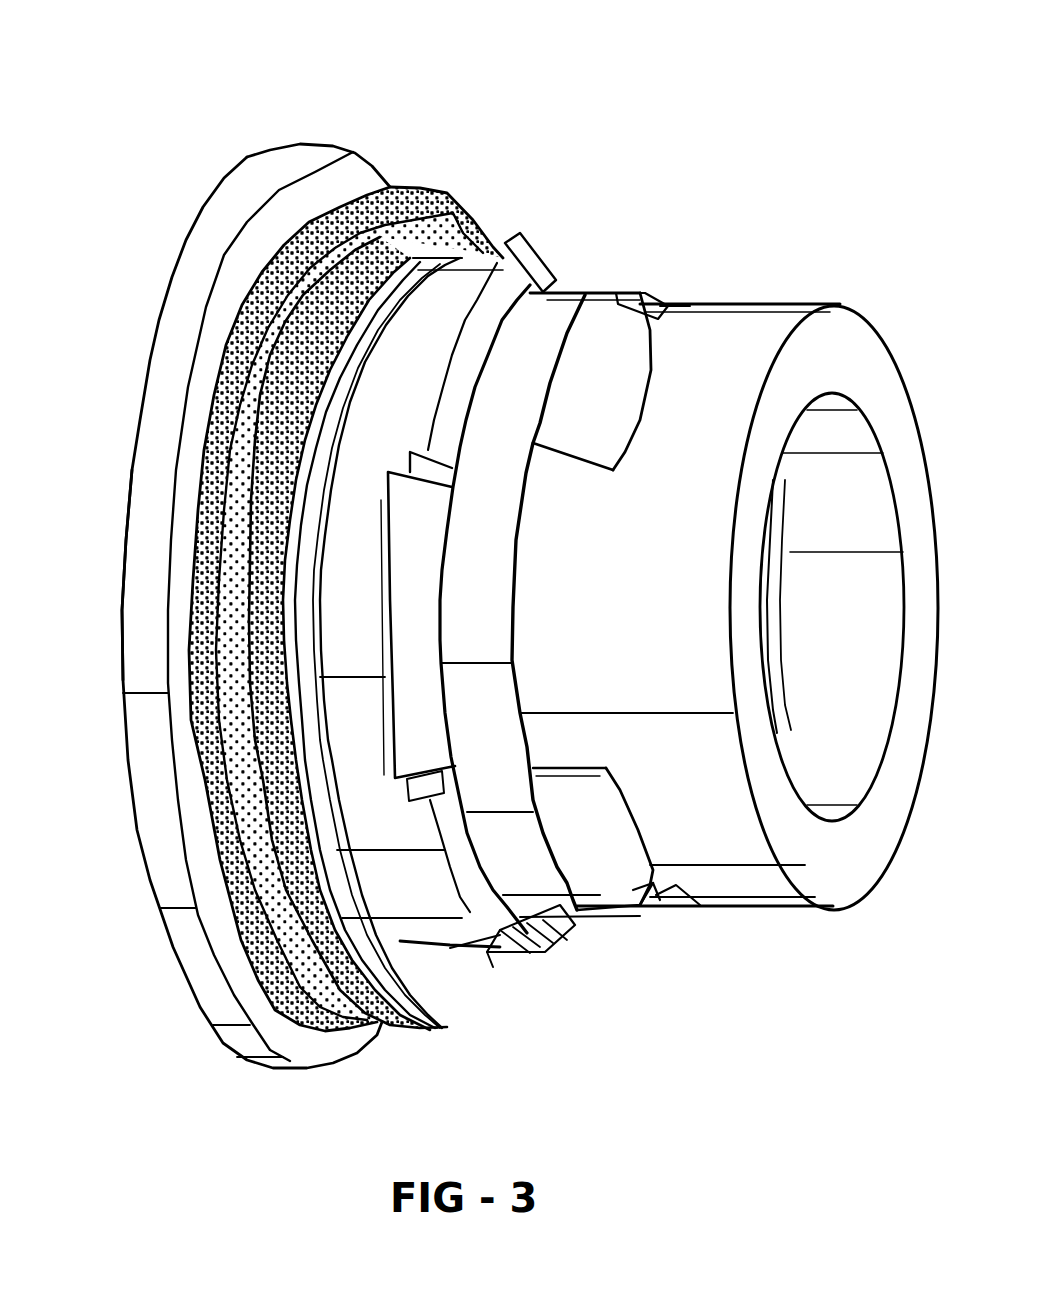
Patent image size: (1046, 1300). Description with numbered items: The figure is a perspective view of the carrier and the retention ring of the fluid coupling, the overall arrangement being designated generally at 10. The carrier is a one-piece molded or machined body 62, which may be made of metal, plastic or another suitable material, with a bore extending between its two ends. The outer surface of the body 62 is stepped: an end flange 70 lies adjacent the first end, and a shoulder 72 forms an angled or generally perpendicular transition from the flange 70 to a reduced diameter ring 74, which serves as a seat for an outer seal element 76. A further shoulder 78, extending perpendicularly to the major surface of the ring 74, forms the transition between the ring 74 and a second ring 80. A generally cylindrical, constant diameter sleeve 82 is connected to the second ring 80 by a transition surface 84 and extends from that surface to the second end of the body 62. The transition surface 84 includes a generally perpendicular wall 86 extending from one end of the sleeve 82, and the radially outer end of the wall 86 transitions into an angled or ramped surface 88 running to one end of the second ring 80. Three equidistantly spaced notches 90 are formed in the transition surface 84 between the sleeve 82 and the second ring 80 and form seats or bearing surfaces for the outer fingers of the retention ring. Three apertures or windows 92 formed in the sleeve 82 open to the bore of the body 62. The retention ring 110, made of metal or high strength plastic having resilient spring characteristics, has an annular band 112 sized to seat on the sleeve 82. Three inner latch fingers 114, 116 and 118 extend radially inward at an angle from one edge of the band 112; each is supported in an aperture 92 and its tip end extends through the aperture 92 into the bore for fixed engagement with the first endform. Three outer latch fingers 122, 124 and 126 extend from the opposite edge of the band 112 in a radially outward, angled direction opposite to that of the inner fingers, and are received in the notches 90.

The seal assembly 10 is at (738, 2).
The body 62 is at (760, 303).
The end flange 70 is at (150, 458).
The shoulder 72 is at (352, 147).
The reduced diameter ring 74 is at (415, 187).
The outer seal element 76 is at (232, 845).
The shoulder 78 is at (457, 230).
The second ring 80 is at (497, 262).
The sleeve 82 is at (815, 306).
The transition surface 84 is at (125, 560).
The wall 86 is at (553, 770).
The ramped surface 88 is at (450, 950).
The notches 90 is at (555, 290).
The apertures or windows 92 is at (664, 310).
The retention ring 110 is at (497, 617).
The annular band 112 is at (543, 463).
The latch finger 114 is at (633, 292).
The latch finger 116 is at (612, 918).
The latch finger 118 is at (770, 628).
The outer latch finger 122 is at (410, 518).
The outer latch finger 124 is at (527, 255).
The outer latch finger 126 is at (527, 960).